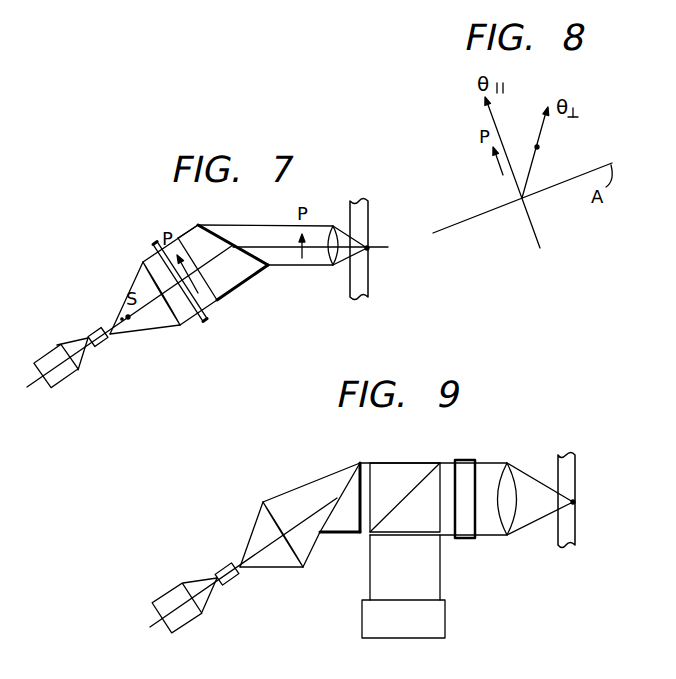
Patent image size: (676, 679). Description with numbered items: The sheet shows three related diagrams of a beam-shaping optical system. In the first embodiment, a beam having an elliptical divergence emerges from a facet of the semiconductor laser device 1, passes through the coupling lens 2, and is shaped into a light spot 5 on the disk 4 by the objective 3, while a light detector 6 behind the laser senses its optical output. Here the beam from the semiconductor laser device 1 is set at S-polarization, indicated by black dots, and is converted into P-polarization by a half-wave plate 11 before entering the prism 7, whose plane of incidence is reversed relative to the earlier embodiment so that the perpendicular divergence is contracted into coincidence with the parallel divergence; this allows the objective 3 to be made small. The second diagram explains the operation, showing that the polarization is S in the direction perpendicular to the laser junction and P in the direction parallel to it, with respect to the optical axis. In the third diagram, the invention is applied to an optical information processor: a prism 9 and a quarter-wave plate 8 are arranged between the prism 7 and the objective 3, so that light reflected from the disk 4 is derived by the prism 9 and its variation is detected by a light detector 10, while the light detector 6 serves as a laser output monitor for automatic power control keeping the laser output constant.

In FIG. 7, the semiconductor laser device 1 is at (97, 326).
In FIG. 9, the semiconductor laser device 1 is at (218, 563).
In FIG. 7, the coupling lens 2 is at (175, 320).
In FIG. 9, the coupling lens 2 is at (274, 512).
In FIG. 7, the objective 3 is at (329, 262).
In FIG. 9, the objective 3 is at (509, 484).
In FIG. 7, the disk 4 is at (363, 214).
In FIG. 9, the disk 4 is at (570, 470).
In FIG. 7, the light spot 5 is at (371, 250).
In FIG. 9, the light spot 5 is at (574, 503).
In FIG. 7, the light detector 6 is at (63, 373).
In FIG. 9, the light detector 6 is at (176, 592).
In FIG. 7, the prism 7 is at (243, 273).
In FIG. 9, the prism 7 is at (353, 481).
In FIG. 9, the quarter-wave plate 8 is at (465, 469).
In FIG. 9, the prism 9 is at (410, 472).
In FIG. 9, the light detector 10 is at (437, 620).
In FIG. 7, the half-wave plate 11 is at (153, 250).